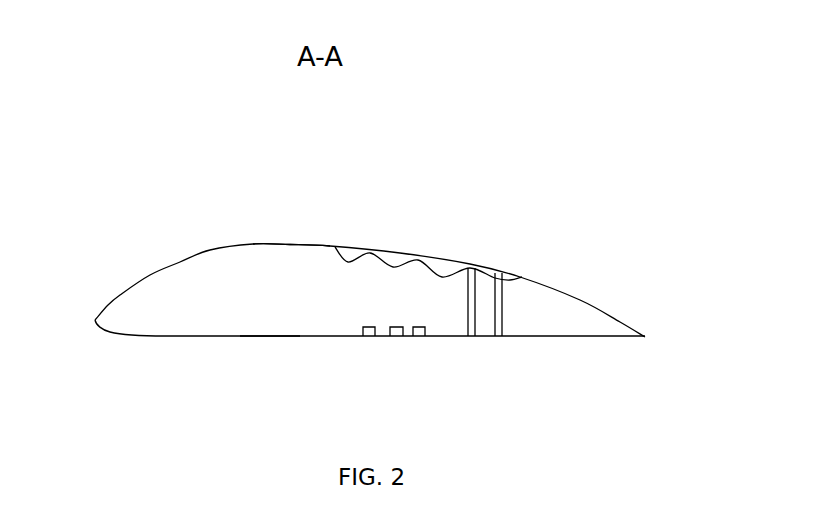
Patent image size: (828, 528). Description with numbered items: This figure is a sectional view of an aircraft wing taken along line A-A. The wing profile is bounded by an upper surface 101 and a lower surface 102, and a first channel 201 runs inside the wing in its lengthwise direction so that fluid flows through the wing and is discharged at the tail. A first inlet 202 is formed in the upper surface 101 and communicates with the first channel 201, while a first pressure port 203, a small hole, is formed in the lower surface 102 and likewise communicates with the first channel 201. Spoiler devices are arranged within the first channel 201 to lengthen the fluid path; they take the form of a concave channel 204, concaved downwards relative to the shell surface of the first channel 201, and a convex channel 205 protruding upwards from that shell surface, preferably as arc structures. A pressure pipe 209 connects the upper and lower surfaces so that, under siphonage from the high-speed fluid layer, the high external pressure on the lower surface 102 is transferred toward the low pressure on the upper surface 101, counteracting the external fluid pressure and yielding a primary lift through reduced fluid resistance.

The upper surface 101 is at (218, 245).
The lower surface 102 is at (241, 336).
The first channel 201 is at (362, 327).
The first inlet 202 is at (288, 244).
The first pressure port 203 is at (292, 336).
The concave channel 204 is at (383, 336).
The convex channel 205 is at (447, 270).
The pressure pipe 209 is at (502, 297).